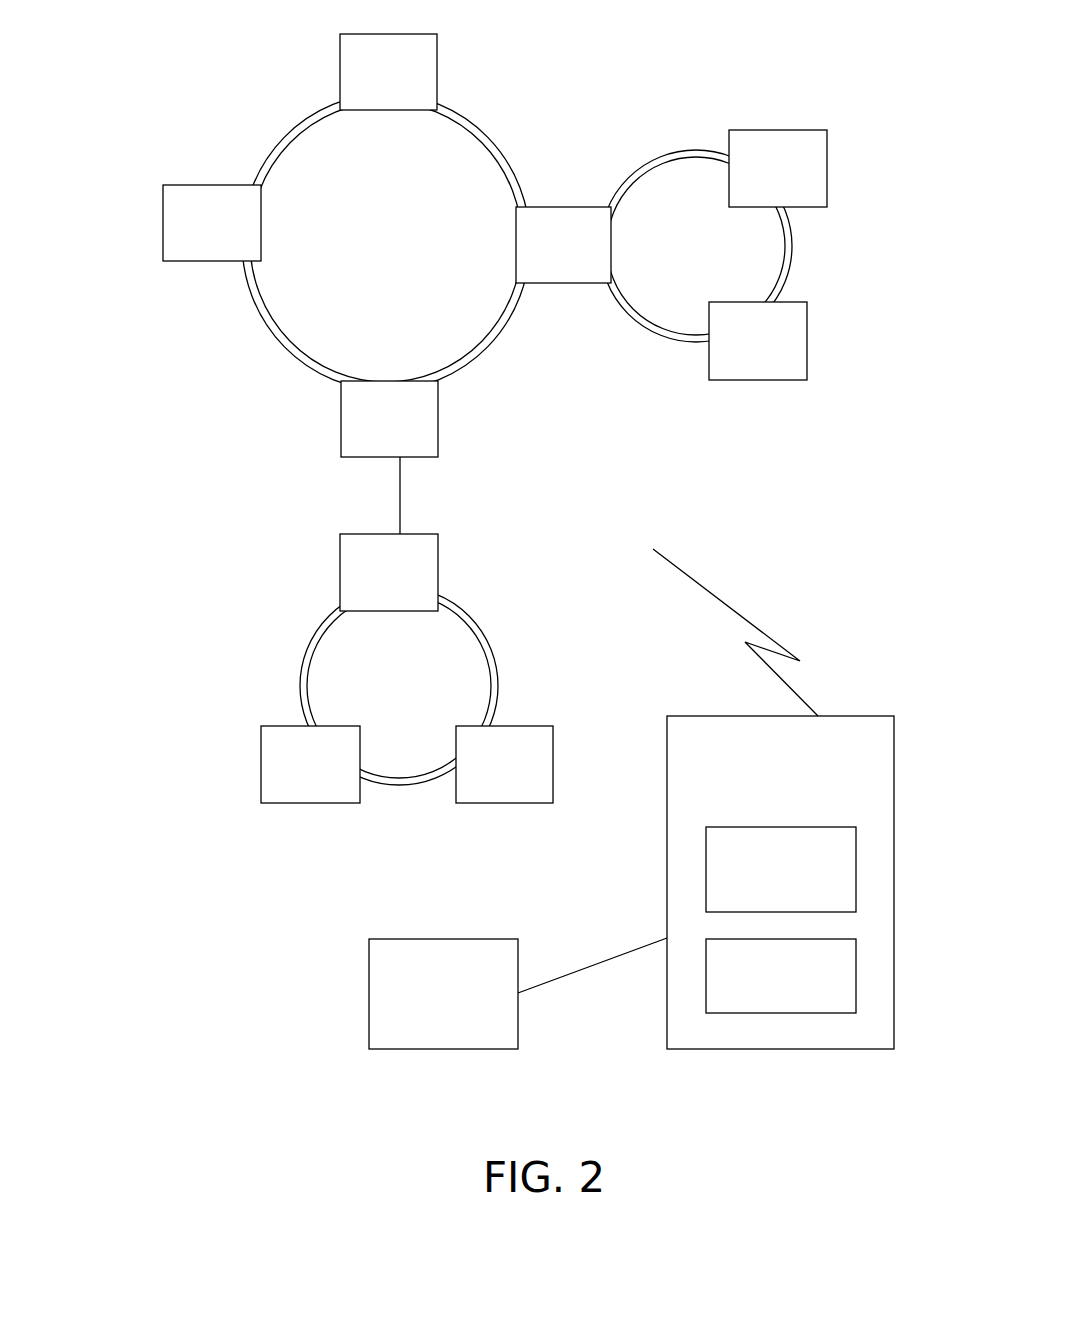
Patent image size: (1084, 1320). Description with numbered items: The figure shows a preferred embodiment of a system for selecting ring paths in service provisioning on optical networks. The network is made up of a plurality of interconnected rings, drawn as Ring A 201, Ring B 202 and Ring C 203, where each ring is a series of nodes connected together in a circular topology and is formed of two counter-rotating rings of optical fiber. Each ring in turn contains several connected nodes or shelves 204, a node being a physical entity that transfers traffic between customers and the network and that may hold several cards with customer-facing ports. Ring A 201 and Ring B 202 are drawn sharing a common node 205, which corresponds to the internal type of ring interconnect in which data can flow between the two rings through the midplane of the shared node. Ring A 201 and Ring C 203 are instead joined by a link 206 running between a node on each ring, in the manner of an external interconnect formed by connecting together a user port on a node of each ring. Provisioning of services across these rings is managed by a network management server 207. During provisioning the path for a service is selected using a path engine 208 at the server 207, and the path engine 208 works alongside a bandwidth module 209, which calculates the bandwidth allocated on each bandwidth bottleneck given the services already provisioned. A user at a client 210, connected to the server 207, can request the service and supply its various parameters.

The ring 201 is at (250, 350).
The ring 202 is at (811, 253).
The ring 203 is at (512, 654).
The nodes or shelves 204 is at (328, 427).
The node shared between Ring A and Ring B 205 is at (581, 299).
The link between Ring A and Ring C 206 is at (416, 513).
The network management server 207 is at (780, 882).
The path engine 208 is at (781, 869).
The bandwidth module 209 is at (781, 976).
The client 210 is at (443, 994).